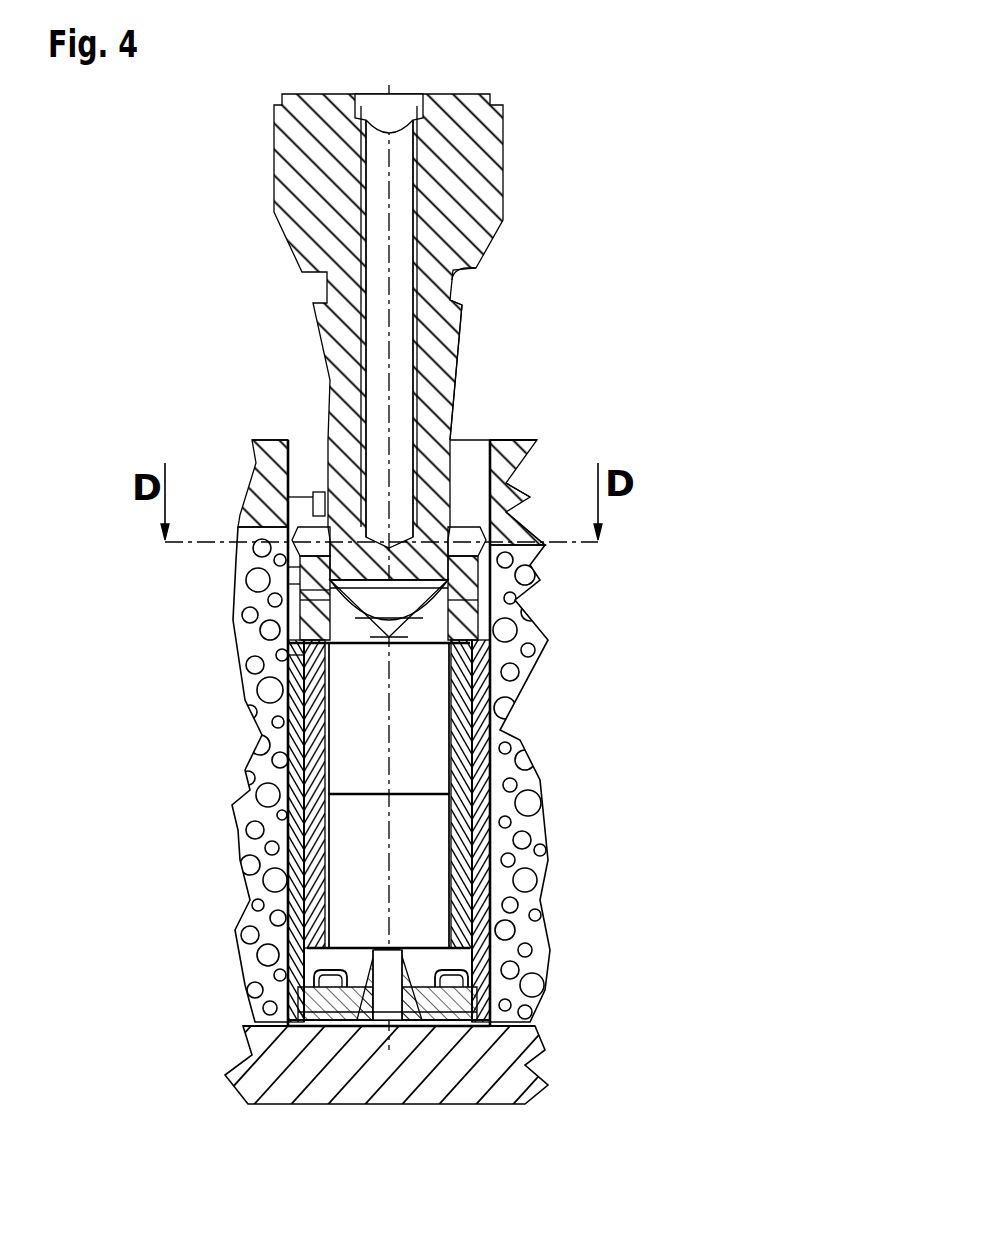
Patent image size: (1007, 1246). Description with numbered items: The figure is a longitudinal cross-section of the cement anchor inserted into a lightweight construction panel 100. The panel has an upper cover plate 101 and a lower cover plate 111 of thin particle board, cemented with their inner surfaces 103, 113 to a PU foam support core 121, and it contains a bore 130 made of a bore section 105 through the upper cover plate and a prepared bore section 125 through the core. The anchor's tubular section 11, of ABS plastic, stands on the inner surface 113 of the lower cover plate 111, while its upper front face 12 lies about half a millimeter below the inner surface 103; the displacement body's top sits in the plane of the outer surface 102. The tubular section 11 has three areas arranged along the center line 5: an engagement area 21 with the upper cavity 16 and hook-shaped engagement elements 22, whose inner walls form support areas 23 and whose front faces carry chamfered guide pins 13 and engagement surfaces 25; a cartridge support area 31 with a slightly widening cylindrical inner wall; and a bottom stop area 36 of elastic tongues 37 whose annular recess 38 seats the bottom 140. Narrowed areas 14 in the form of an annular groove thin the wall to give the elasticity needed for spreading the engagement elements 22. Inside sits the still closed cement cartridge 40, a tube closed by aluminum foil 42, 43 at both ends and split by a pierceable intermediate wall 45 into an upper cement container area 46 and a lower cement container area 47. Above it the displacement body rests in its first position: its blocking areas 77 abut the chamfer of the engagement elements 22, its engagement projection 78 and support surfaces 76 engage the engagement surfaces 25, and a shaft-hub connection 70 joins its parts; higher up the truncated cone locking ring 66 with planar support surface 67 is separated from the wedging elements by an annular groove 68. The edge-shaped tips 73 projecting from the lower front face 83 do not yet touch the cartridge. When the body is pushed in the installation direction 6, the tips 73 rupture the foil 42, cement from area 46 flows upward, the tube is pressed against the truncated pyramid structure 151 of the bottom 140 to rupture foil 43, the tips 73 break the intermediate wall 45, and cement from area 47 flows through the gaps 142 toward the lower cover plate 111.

The center line 5 is at (390, 232).
The installation direction 6 is at (386, 350).
The tubular section 11 is at (295, 808).
The front face 12 is at (164, 480).
The guide pins 13 is at (742, 493).
The narrowed areas 14 is at (303, 655).
The upper cavity 16 is at (183, 444).
The engagement area 21 is at (310, 587).
The engagement elements 22 is at (376, 578).
The support areas 23 is at (308, 567).
The engagement surfaces 25 is at (177, 511).
The cartridge support area 31 is at (262, 782).
The bottom stop area 36 is at (312, 992).
The elastic tongues 37 is at (292, 1020).
The annular recess 38 is at (290, 1015).
The cement cartridge 40 is at (478, 830).
The aluminum foil 42 is at (470, 642).
The aluminum foil 43 is at (470, 945).
The intermediate wall 45 is at (418, 793).
The cement container area 46 is at (425, 719).
The lower cement container area 47 is at (429, 858).
The locking ring 66 is at (458, 327).
The support surface 67 is at (456, 305).
The annular groove 68 is at (450, 287).
The shaft-hub connection 70 is at (272, 585).
The tips 73 is at (383, 631).
The support surfaces 76 is at (470, 592).
The blocking areas 77 is at (462, 572).
The engagement projection 78 is at (455, 610).
The lower front face 83 is at (377, 618).
The lightweight construction panel 100 is at (556, 1062).
The upper cover plate 101 is at (528, 450).
The outer surface 102 is at (517, 438).
The inner surface 103 is at (520, 545).
The bore section 105 is at (540, 478).
The lower cover plate 111 is at (512, 1043).
The inner surface 113 is at (492, 1018).
The support core 121 is at (522, 803).
The bore section 125 is at (492, 690).
The bore 130 is at (592, 385).
The bottom 140 is at (498, 993).
The gap 142 is at (307, 986).
The truncated pyramid structure 151 is at (412, 970).